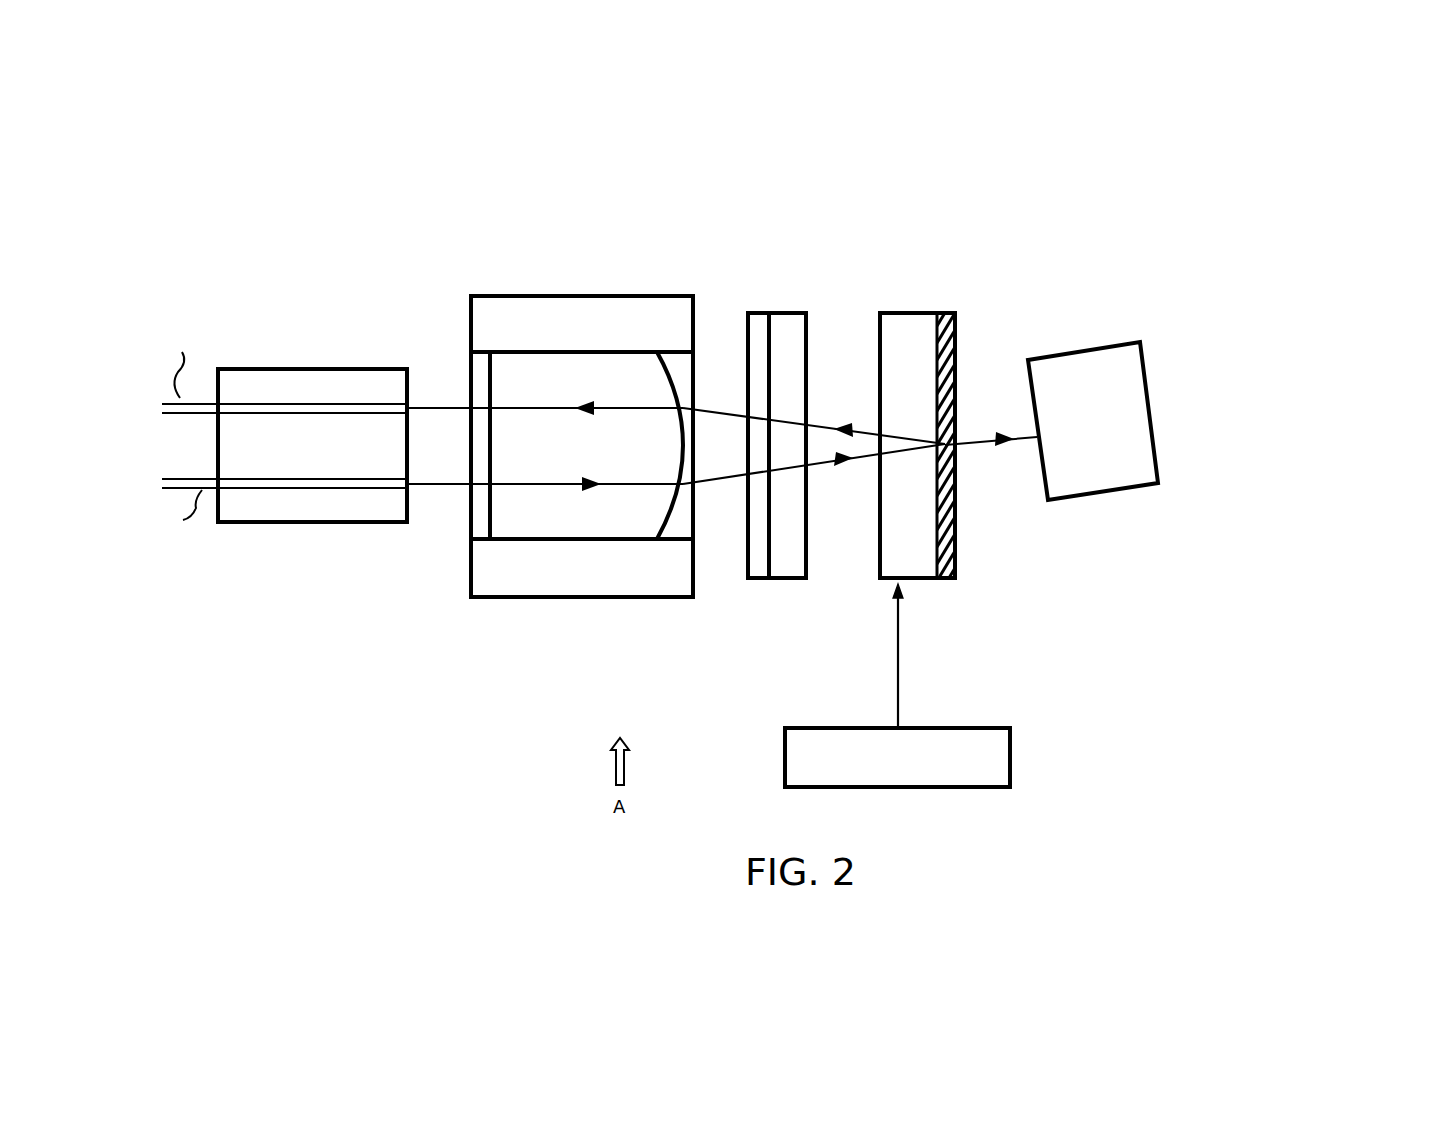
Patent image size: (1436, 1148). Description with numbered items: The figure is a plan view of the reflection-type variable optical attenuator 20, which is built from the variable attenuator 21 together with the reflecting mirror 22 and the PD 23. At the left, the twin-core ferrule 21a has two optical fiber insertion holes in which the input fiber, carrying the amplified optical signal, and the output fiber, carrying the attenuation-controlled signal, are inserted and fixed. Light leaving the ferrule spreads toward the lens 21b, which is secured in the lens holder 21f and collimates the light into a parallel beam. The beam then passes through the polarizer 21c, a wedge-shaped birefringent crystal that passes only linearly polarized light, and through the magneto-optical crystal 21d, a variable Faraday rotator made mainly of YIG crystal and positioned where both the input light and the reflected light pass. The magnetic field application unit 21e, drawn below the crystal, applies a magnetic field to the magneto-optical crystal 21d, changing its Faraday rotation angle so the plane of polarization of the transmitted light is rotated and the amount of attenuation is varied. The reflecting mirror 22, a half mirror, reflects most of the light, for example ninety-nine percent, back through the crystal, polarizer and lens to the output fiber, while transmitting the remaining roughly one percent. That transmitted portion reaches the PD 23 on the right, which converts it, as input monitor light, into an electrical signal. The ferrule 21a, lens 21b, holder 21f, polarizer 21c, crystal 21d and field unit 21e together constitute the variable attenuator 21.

The reflection-type variable optical attenuator 20 is at (800, 180).
The variable attenuator 21 is at (228, 248).
The twin-core ferrule 21a is at (345, 523).
The lens 21b is at (670, 369).
The polarizer 21c is at (760, 580).
The magneto-optical crystal 21d is at (920, 578).
The magnetic field application unit 21e is at (1010, 748).
The lens holder 21f is at (485, 597).
The reflecting mirror 22 is at (958, 332).
The PD 23 is at (1073, 503).